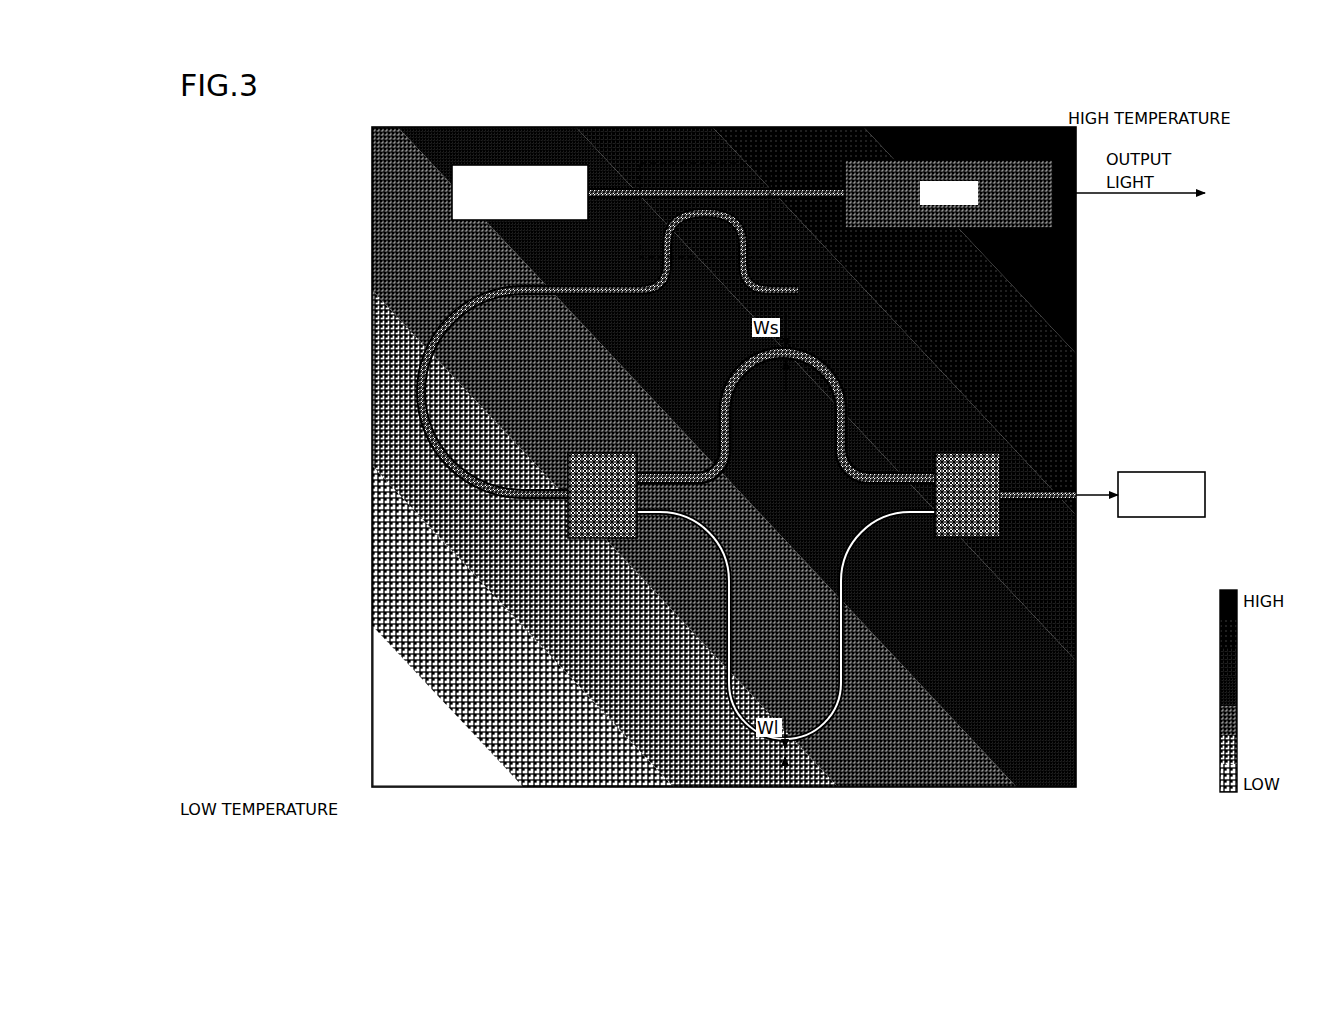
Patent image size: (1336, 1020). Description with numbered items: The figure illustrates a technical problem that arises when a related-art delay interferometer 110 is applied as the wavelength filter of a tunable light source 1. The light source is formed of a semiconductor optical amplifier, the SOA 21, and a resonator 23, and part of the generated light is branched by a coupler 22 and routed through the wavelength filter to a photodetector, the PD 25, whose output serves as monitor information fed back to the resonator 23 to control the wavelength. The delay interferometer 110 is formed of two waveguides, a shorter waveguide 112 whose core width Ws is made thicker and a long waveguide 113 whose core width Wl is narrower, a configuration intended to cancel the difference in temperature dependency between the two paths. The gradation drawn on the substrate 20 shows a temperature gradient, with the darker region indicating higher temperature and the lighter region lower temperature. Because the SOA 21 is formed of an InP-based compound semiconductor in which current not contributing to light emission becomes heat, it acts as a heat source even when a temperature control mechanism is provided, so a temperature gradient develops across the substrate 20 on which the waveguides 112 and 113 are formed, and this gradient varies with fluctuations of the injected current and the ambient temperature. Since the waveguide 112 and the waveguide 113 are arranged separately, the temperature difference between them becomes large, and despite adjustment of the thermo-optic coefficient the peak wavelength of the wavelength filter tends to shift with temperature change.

The wavelength tunable laser device 1 is at (1212, 79).
The substrate 20 is at (975, 127).
The semiconductor optical amplifier (SOA) 21 is at (1010, 228).
The coupler 22 is at (724, 165).
The resonator 23 is at (536, 164).
The photodetector (PD) 25 is at (1168, 473).
The delay interferometer 110 is at (801, 528).
The shorter waveguide 112 is at (786, 415).
The long waveguide 113 is at (847, 626).